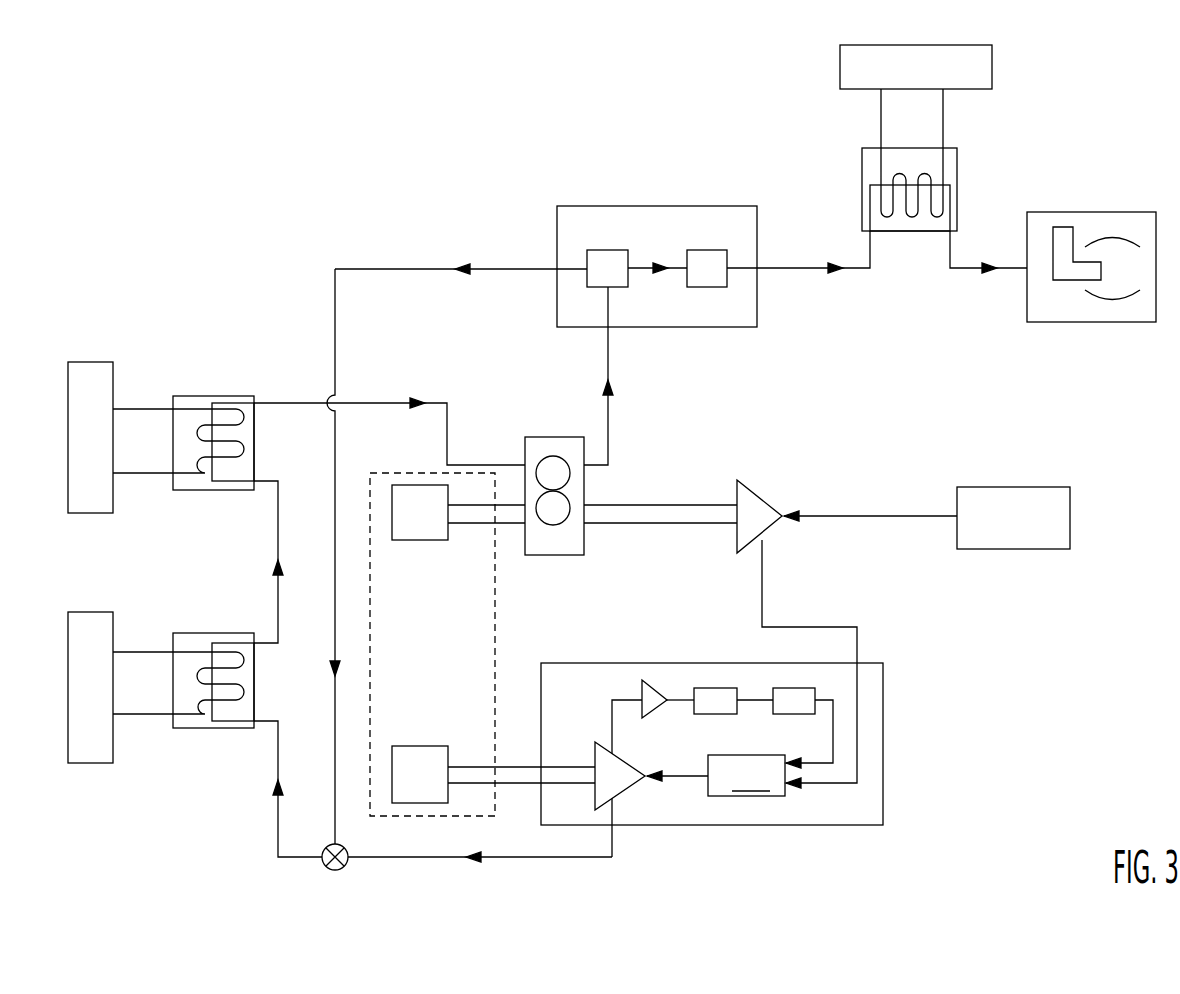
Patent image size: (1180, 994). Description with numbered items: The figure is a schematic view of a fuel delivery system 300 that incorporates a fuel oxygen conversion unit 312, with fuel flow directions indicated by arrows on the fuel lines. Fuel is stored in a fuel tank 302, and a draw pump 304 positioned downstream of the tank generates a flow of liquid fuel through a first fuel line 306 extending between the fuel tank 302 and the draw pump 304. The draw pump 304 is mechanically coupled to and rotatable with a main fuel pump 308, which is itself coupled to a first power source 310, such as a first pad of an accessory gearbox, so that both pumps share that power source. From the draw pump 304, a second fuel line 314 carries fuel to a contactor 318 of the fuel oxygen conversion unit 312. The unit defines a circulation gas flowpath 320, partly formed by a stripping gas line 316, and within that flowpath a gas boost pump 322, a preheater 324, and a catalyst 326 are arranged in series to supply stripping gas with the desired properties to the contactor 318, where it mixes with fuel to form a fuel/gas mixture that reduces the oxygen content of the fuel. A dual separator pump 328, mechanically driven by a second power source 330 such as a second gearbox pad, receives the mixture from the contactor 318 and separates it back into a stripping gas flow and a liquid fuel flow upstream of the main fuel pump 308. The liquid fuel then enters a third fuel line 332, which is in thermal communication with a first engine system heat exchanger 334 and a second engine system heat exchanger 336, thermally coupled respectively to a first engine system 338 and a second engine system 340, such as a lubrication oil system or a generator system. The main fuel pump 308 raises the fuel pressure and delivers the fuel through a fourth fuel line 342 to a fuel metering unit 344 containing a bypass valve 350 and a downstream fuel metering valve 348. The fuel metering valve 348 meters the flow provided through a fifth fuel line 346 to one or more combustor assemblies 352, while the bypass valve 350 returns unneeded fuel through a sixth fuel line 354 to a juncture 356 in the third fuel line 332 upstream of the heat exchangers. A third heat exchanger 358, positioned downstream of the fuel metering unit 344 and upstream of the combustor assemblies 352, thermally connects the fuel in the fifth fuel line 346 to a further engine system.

The fuel delivery system 300 is at (214, 143).
The fuel tank 302 is at (1031, 487).
The draw pump 304 is at (755, 505).
The first fuel line 306 is at (868, 516).
The main fuel pump 308 is at (552, 437).
The first power source 310 is at (418, 535).
The fuel oxygen conversion unit 312 is at (657, 663).
The second fuel line 314 is at (812, 627).
The stripping gas line 316 is at (612, 700).
The contactor 318 is at (716, 775).
The circulation gas flowpath 320 is at (685, 688).
The gas boost pump 322 is at (648, 712).
The preheater 324 is at (714, 705).
The catalyst 326 is at (805, 688).
The dual separator pump 328 is at (616, 780).
The second power source 330 is at (420, 746).
The third fuel line 332 is at (436, 403).
The first engine system heat exchanger 334 is at (213, 728).
The second engine system heat exchanger 336 is at (205, 396).
The first engine system 338 is at (93, 763).
The second engine system 340 is at (92, 362).
The fourth fuel line 342 is at (610, 353).
The fuel metering unit 344 is at (633, 206).
The fifth fuel line 346 is at (805, 268).
The fuel metering valve 348 is at (700, 250).
The bypass valve 350 is at (605, 250).
The combustor assemblies 352 is at (1106, 212).
The sixth fuel line 354 is at (335, 615).
The juncture 356 is at (340, 870).
The third heat exchanger 358 is at (958, 173).